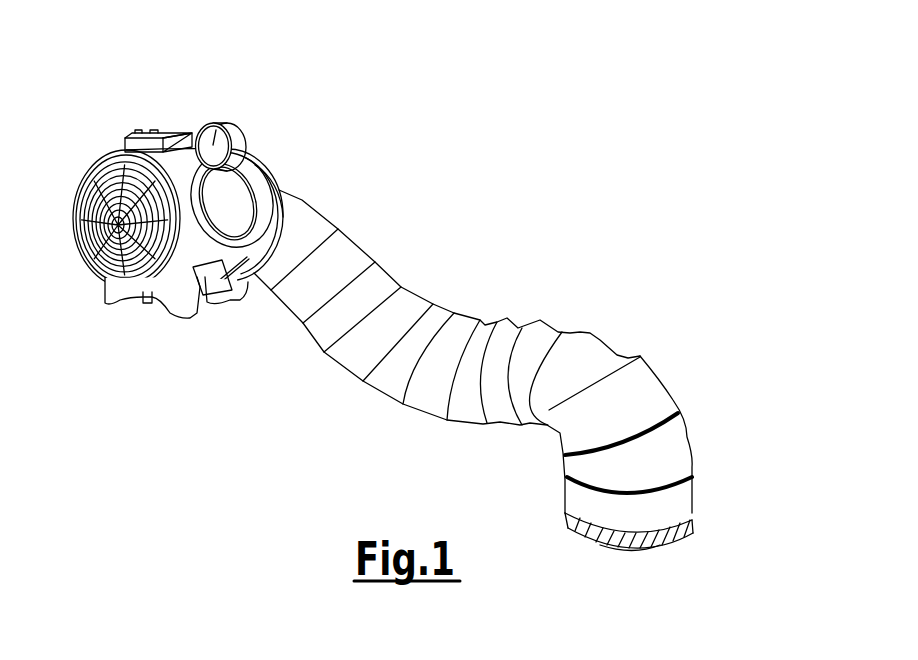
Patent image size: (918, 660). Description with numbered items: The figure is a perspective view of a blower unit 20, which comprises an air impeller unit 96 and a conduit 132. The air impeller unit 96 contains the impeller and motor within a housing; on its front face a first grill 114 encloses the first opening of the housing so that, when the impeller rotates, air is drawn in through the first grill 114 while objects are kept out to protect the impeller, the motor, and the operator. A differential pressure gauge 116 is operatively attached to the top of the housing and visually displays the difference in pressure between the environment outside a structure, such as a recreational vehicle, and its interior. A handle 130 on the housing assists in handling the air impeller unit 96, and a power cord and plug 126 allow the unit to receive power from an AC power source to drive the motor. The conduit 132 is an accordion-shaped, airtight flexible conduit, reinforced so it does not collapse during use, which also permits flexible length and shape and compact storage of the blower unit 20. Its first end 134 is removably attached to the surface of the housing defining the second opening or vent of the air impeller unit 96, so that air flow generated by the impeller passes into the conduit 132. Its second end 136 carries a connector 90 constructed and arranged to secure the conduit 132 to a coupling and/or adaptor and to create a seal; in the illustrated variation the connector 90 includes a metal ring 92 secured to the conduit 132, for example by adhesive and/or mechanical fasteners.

The blower unit 20 is at (329, 183).
The connector 90 is at (654, 545).
The metal ring 92 is at (617, 548).
The air impeller unit 96 is at (155, 219).
The first grill 114 is at (92, 243).
The differential pressure gauge 116 is at (218, 131).
The power cord and plug 126 is at (247, 292).
The handle 130 is at (167, 131).
The conduit 132 is at (410, 308).
The first end 134 is at (264, 149).
The second end 136 is at (713, 519).